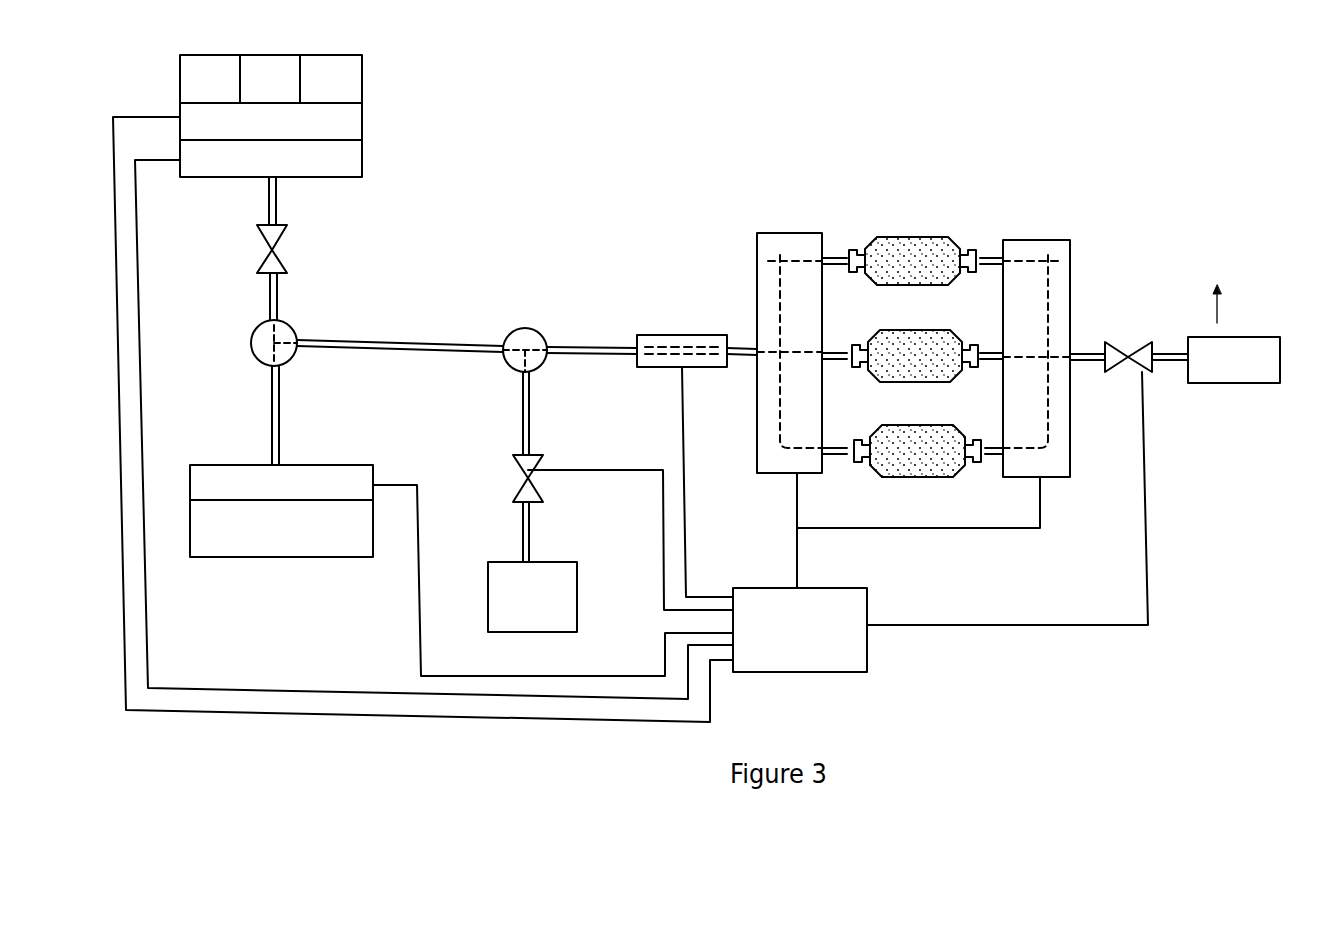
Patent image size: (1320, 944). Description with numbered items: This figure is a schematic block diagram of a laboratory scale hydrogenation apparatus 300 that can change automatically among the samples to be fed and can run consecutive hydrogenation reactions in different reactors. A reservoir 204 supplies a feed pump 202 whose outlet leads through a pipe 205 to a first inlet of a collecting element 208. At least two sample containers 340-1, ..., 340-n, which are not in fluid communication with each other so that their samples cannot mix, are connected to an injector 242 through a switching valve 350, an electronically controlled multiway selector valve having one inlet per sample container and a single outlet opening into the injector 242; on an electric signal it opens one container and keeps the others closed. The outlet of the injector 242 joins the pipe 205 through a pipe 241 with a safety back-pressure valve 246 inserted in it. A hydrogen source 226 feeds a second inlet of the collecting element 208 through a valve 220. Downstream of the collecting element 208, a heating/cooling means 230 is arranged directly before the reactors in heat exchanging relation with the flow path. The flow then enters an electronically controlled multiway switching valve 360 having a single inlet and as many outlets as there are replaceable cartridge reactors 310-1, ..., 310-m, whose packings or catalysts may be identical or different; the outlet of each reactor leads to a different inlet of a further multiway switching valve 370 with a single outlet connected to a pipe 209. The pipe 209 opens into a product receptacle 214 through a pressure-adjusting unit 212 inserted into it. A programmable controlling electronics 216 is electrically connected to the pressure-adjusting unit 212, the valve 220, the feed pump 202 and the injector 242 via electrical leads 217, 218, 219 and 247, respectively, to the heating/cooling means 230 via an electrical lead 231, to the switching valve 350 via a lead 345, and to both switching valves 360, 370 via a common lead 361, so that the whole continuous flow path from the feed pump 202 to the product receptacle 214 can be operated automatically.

The hydrogenation apparatus 300 is at (477, 146).
The sample container 340-1 is at (218, 69).
The sample container 340-n is at (338, 70).
The switching valve 350 is at (271, 121).
The injector 242 is at (271, 158).
The lead 345 is at (127, 114).
The electrical lead 247 is at (140, 235).
The safety back-pressure valve 246 is at (283, 238).
The pipe 241 is at (277, 298).
The pipe 205 is at (392, 340).
The collecting element 208 is at (523, 334).
The heating/cooling means 230 is at (676, 335).
The electrical lead 231 is at (685, 455).
The valve 220 is at (517, 466).
The electrical lead 218 is at (600, 470).
The hydrogen source 226 is at (532, 597).
The feed pump 202 is at (281, 482).
The reservoir 204 is at (281, 528).
The electrical lead 219 is at (401, 483).
The controlling electronics 216 is at (800, 630).
The common lead 361 is at (798, 560).
The electrical lead 217 is at (1150, 516).
The switching valve 360 is at (801, 244).
The switching valve 370 is at (1033, 247).
The hydrogenation reactor 310-1 is at (913, 240).
The hydrogenation reactor 310-m is at (924, 473).
The pipe 209 is at (1091, 350).
The pressure-adjusting unit 212 is at (1143, 345).
The product receptacle 214 is at (1216, 335).